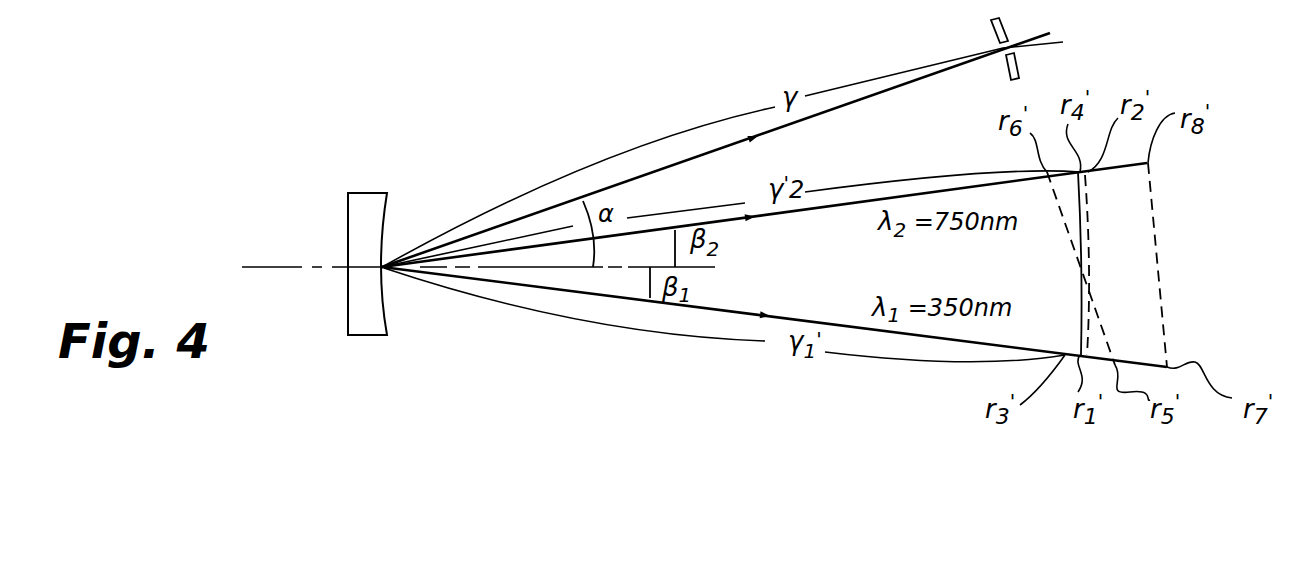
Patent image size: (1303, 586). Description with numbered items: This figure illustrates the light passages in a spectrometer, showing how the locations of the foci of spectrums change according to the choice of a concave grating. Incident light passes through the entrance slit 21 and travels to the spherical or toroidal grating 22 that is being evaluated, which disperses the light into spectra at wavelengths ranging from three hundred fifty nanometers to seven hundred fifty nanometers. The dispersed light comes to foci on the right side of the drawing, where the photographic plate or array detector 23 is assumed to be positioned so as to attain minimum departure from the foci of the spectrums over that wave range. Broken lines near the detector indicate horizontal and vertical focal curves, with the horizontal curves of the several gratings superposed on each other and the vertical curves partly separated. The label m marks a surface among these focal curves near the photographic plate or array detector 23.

The entrance slit 21 is at (1022, 63).
The spherical or toroidal grating 22 is at (352, 207).
The photographic plate or array detector 23 is at (1092, 258).
The curved image surface m is at (1090, 285).